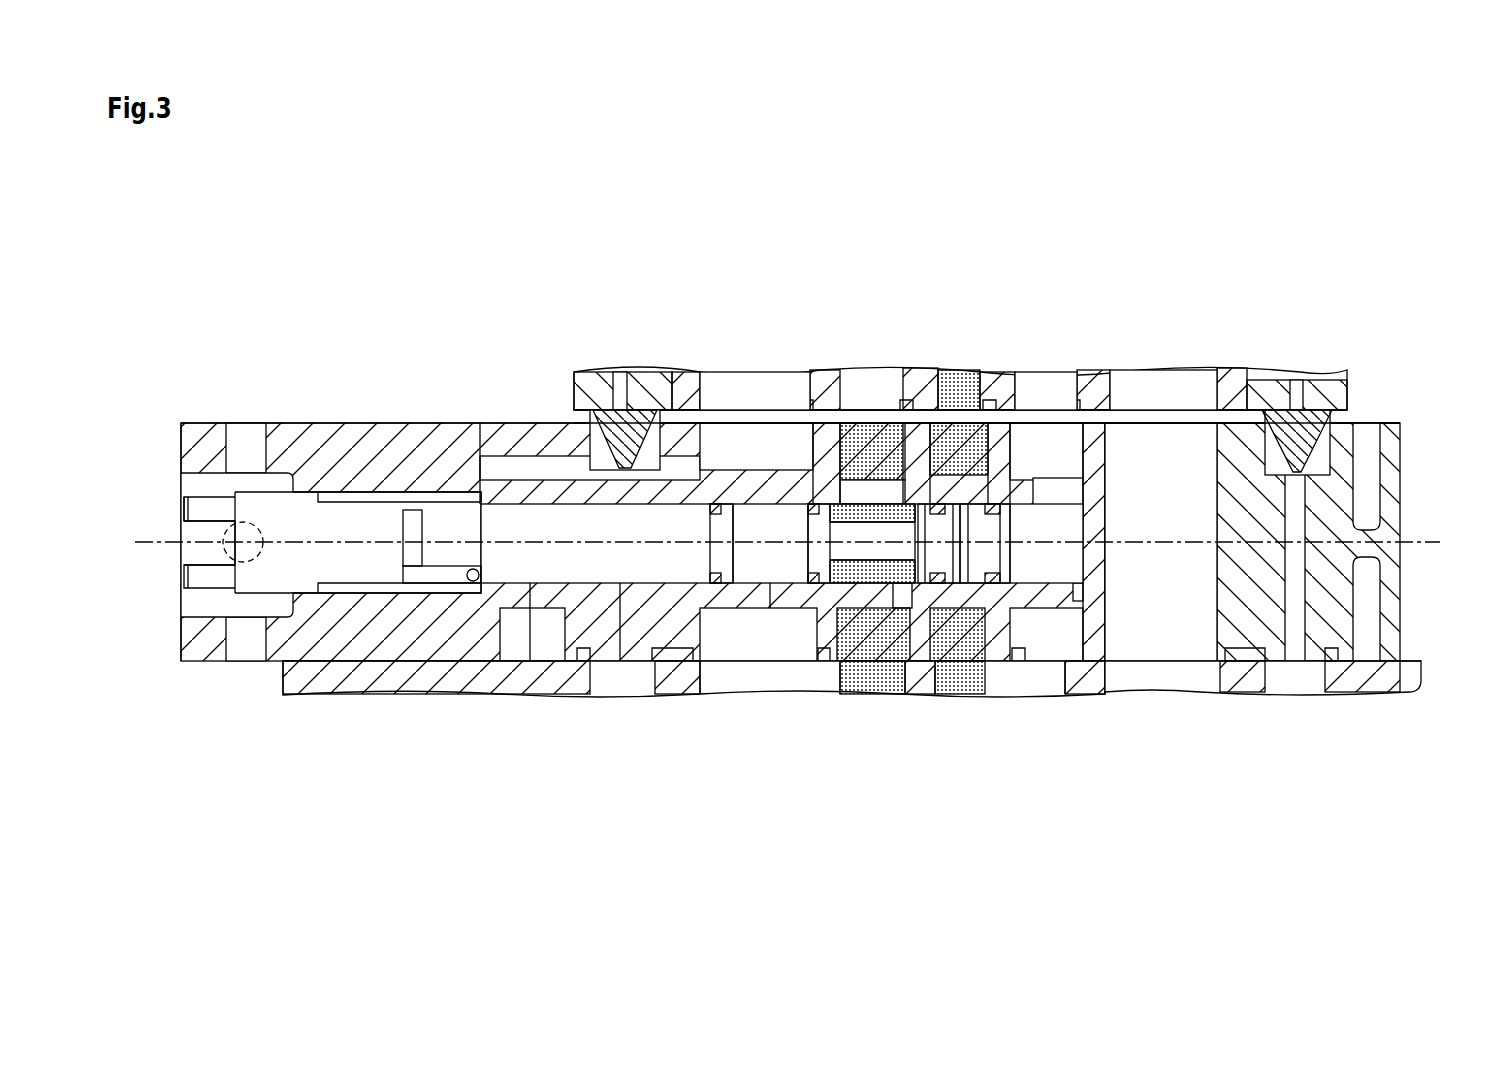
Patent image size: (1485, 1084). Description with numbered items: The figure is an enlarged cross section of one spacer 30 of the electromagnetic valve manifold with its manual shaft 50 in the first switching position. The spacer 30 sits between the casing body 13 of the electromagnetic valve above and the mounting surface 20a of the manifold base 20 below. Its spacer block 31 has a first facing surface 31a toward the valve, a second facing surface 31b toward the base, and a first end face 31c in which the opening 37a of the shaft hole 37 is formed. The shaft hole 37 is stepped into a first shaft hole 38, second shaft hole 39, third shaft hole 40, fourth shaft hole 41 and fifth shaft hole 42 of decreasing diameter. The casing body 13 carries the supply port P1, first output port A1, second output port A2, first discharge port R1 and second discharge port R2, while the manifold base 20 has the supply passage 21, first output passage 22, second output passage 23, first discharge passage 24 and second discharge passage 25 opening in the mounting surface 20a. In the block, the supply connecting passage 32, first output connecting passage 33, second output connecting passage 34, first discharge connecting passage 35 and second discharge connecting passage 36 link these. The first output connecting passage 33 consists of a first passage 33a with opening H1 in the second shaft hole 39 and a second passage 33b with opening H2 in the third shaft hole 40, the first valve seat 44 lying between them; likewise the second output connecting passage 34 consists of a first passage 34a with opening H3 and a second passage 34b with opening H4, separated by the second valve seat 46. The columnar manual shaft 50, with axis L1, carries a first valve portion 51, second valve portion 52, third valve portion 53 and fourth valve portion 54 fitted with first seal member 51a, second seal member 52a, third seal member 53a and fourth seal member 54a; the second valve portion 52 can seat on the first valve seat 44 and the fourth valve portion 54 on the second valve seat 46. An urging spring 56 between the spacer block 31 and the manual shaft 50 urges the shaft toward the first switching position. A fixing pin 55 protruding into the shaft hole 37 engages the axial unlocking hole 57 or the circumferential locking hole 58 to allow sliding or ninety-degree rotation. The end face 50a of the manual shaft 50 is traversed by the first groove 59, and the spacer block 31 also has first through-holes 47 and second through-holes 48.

The spacer 30 is at (211, 331).
The spacer block 31 is at (332, 440).
The first facing surface 31a is at (760, 420).
The second facing surface 31b is at (726, 665).
The first end face 31c is at (183, 455).
The first through-holes 47 is at (262, 462).
The urging spring 56 is at (452, 495).
The casing body 13 is at (690, 385).
The first discharge port R1 is at (790, 380).
The third shaft hole 40 is at (862, 498).
The first output port A1 is at (870, 395).
The first passage 33a is at (888, 437).
The supply port P1 is at (955, 385).
The fourth shaft hole 41 is at (994, 512).
The second output port A2 is at (1035, 385).
The first passage 34a is at (1063, 440).
The second discharge port R2 is at (1160, 388).
The opening 37a is at (190, 482).
The end face 50a is at (183, 513).
The first groove 59 is at (200, 528).
The axis L1 is at (205, 552).
The manual shaft 50 is at (240, 600).
The second through-holes 48 is at (257, 560).
The first seal member 51a is at (716, 503).
The second seal member 52a is at (814, 503).
The third seal member 53a is at (936, 503).
The fourth seal member 54a is at (1030, 500).
The opening H3 is at (1082, 494).
The fifth shaft hole 42 is at (1082, 512).
The first valve portion 51 is at (710, 530).
The second valve portion 52 is at (808, 535).
The opening H1 is at (860, 545).
The third valve portion 53 is at (936, 540).
The fourth valve portion 54 is at (992, 558).
The second valve seat 46 is at (1060, 576).
The opening H2 is at (905, 600).
The opening H4 is at (1082, 592).
The second discharge connecting passage 36 is at (1200, 606).
The first discharge connecting passage 35 is at (705, 627).
The first output connecting passage 33 is at (835, 630).
The supply connecting passage 32 is at (990, 625).
The second output connecting passage 34 is at (1085, 630).
The mounting surface 20a is at (1415, 665).
The locking hole 58 is at (412, 572).
The unlocking hole 57 is at (440, 582).
The fixing pin 55 is at (472, 585).
The shaft hole 37 is at (530, 662).
The first shaft hole 38 is at (620, 662).
The second shaft hole 39 is at (772, 585).
The first discharge passage 24 is at (742, 690).
The first valve seat 44 is at (876, 575).
The first output passage 22 is at (878, 693).
The second passage 33b is at (886, 632).
The supply passage 21 is at (952, 650).
The second output passage 23 is at (1038, 680).
The second passage 34b is at (1067, 635).
The second discharge passage 25 is at (1150, 680).
The manifold base 20 is at (1345, 692).